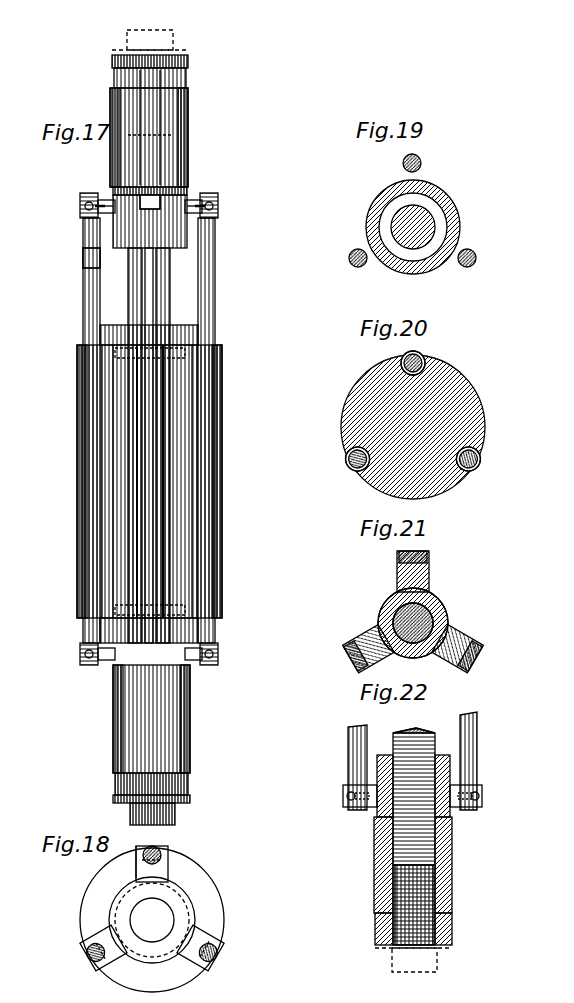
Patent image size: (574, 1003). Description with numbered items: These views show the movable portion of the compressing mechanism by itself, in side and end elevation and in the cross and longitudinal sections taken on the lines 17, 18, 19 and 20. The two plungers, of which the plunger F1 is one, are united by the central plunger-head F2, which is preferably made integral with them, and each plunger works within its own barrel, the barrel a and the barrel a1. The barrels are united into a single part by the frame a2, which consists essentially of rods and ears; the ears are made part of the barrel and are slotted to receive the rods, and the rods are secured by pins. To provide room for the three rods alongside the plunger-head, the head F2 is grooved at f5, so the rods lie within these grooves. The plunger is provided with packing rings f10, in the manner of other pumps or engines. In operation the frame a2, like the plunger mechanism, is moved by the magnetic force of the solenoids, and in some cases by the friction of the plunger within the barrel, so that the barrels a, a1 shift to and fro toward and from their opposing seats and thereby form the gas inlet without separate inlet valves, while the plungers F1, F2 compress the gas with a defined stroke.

In FIG. 17, the barrel a is at (231, 284).
In FIG. 17, the barrel a1 is at (160, 112).
In FIG. 22, the barrel a1 is at (426, 863).
In FIG. 17, the frame a2 is at (85, 280).
In FIG. 22, the frame a2 is at (494, 733).
In FIG. 17, the plunger F1 is at (176, 816).
In FIG. 19, the plunger F1 is at (436, 222).
In FIG. 22, the plunger F1 is at (435, 835).
In FIG. 17, the plunger-head F2 is at (132, 481).
In FIG. 18, the plunger-head F2 is at (159, 920).
In FIG. 19, the plunger-head F2 is at (445, 192).
In FIG. 20, the plunger-head F2 is at (466, 380).
In FIG. 17, the groove f5 is at (138, 420).
In FIG. 20, the groove f5 is at (400, 352).
In FIG. 22, the packing ring f10 is at (396, 832).
In FIG. 17, the section line 17 is at (84, 333).
In FIG. 17, the section line 18 is at (88, 503).
In FIG. 17, the section line 19 is at (84, 656).
In FIG. 22, the section line 19 is at (343, 795).
In FIG. 21, the section line 20 is at (376, 623).